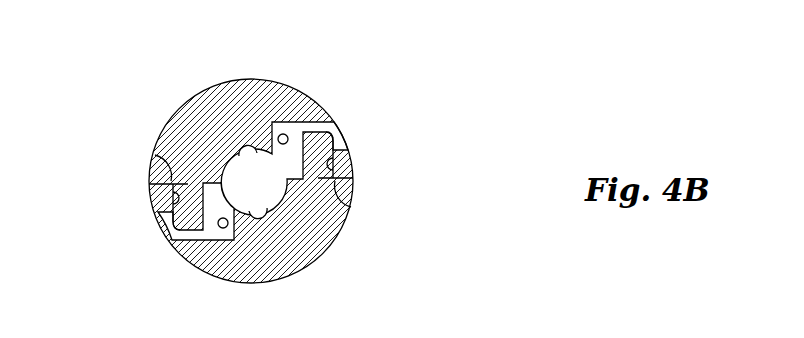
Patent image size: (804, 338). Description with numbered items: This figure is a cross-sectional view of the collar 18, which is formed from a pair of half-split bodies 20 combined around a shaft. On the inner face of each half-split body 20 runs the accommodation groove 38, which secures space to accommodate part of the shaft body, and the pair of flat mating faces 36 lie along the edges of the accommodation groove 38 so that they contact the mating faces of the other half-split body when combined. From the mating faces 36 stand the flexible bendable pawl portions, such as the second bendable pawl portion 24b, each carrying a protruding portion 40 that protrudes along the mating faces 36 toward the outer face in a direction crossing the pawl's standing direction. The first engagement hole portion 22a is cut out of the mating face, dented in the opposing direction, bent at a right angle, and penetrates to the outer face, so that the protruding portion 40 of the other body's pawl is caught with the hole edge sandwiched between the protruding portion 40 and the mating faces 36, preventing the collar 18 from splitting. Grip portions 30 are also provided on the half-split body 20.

The collar 18 is at (256, 314).
The half-split body 20 is at (213, 100).
The first engagement hole portion 22a is at (353, 158).
The second bendable pawl portion 24b is at (335, 131).
The grip portion 30 is at (253, 150).
The mating face 36 is at (343, 198).
The accommodation groove 38 is at (287, 136).
The protruding portion 40 is at (352, 150).